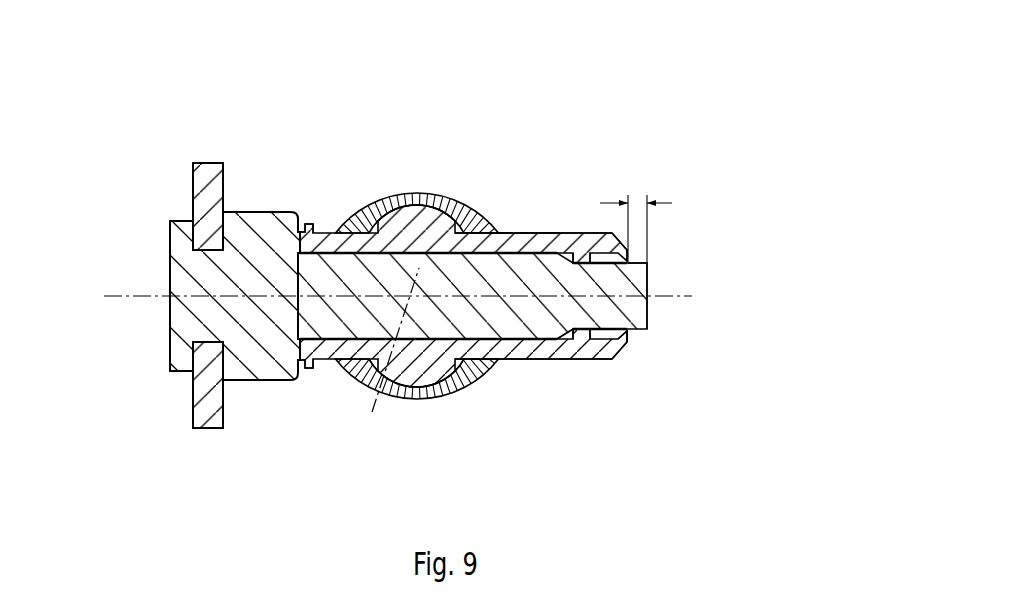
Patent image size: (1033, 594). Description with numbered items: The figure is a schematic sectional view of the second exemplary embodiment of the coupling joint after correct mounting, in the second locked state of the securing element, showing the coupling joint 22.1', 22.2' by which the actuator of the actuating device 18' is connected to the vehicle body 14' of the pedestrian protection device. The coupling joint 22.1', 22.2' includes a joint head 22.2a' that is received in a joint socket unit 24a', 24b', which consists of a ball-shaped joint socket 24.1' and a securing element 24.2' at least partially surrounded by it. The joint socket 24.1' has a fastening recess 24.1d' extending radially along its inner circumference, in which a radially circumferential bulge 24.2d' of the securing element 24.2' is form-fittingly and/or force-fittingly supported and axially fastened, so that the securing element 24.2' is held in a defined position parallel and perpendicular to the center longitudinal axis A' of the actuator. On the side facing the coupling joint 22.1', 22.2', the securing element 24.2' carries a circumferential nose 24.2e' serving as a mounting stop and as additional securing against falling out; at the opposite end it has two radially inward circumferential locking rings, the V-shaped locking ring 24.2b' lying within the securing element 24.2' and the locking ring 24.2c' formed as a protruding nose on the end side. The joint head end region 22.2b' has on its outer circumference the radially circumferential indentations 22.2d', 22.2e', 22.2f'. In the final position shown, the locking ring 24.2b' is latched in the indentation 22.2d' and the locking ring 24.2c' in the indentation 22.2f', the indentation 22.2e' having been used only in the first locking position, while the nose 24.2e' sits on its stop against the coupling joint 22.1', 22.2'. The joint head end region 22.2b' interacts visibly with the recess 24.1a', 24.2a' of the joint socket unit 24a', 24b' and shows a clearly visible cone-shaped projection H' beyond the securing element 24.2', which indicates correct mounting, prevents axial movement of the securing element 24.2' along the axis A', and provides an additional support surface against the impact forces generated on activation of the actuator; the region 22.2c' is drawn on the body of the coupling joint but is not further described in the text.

The actuating device 18' is at (439, 247).
The vehicle body 14' is at (209, 253).
The coupling joint 22.1' is at (442, 225).
The coupling joint 22.2' is at (255, 246).
The joint head 22.2a' is at (321, 198).
The joint head end region 22.2b' is at (717, 292).
The pin flange 22.2c' is at (160, 267).
The indentation 22.2d' is at (530, 378).
The indentation 22.2e' is at (591, 376).
The indentation 22.2f' is at (684, 335).
The joint socket unit 24a' is at (552, 125).
The joint socket unit 24b' is at (552, 188).
The joint socket 24.1' is at (417, 335).
The recess 24.1a' is at (514, 192).
The fastening recess 24.1d' is at (443, 418).
The securing element 24.2' is at (463, 257).
The recess 24.2a' is at (682, 239).
The locking ring 24.2b' is at (593, 214).
The locking ring 24.2c' is at (675, 363).
The bulge 24.2d' is at (416, 174).
The nose 24.2e' is at (293, 403).
The projection H' is at (636, 193).
The center longitudinal axis A' is at (382, 345).